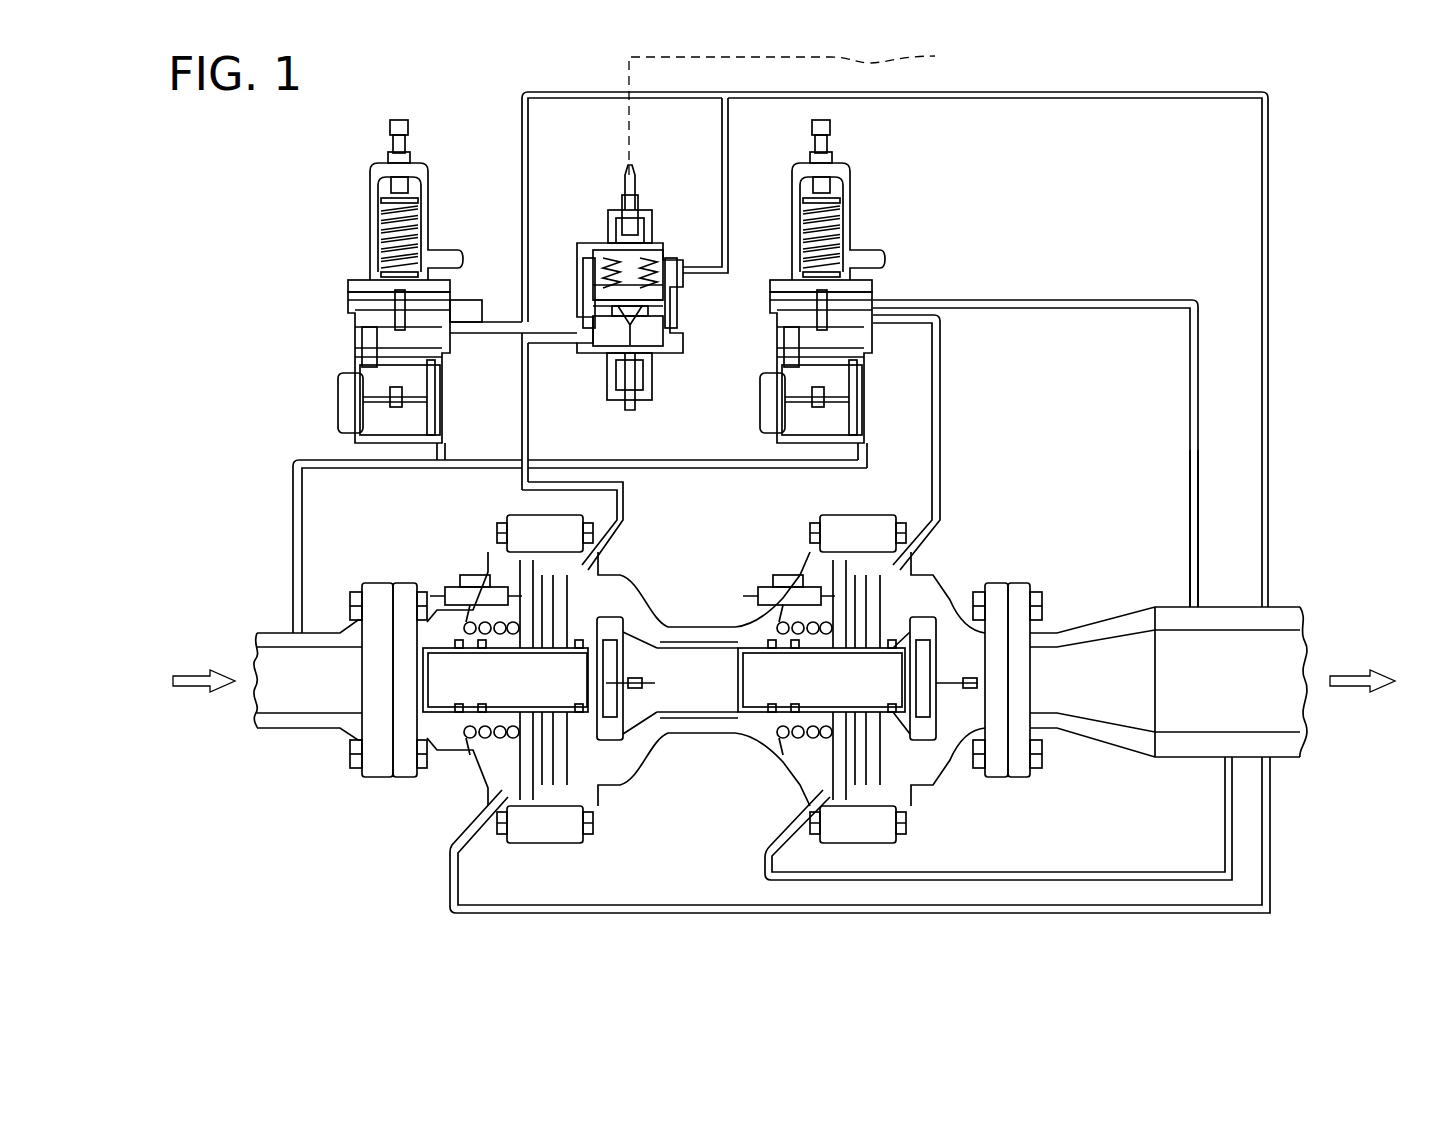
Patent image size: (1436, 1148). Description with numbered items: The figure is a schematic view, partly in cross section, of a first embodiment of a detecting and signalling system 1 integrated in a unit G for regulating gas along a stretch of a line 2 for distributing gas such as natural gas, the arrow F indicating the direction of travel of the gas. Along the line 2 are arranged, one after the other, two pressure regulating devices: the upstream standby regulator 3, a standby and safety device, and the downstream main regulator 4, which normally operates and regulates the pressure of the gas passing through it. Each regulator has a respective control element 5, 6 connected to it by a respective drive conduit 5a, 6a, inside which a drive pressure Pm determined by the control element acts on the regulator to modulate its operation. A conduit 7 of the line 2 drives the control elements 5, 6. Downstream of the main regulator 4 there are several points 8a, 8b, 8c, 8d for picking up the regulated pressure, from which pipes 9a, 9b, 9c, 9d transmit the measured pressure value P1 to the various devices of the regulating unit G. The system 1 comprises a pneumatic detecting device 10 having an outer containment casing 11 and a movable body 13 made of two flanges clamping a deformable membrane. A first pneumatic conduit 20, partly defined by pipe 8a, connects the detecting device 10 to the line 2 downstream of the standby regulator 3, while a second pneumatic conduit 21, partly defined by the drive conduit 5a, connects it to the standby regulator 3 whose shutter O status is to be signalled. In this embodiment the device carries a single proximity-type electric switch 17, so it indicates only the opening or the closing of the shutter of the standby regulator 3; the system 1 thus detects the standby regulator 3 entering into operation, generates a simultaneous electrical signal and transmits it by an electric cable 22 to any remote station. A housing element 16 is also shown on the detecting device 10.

The detecting and signalling system 1 is at (583, 163).
The line for distributing gas 2 is at (292, 737).
The standby regulator 3 is at (487, 560).
The main regulator 4 is at (915, 802).
The control element 5 is at (347, 223).
The drive conduit 5a is at (537, 433).
The control element 6 is at (860, 195).
The drive conduit 6a is at (947, 440).
The conduit for driving the control elements 7 is at (292, 575).
The pressure pick-up point 8a is at (1277, 597).
The pressure pick-up point 8b is at (1277, 223).
The pressure pick-up point 8c is at (1221, 758).
The pressure pick-up point 8d is at (1275, 760).
The pipe 9a is at (1205, 597).
The pipe 9b is at (1183, 443).
The pipe 9c is at (1070, 868).
The pipe 9d is at (1277, 882).
The pneumatic detecting device 10 is at (600, 244).
The outer containment casing 11 is at (663, 237).
The movable body 13 is at (635, 313).
The regulator housing 16 is at (617, 197).
The electric switch 17 is at (645, 198).
The first pneumatic conduit 20 is at (677, 281).
The second pneumatic conduit 21 is at (583, 343).
The electric cable 22 is at (799, 107).
The direction of travel of the gas F is at (204, 668).
The unit for regulating the gas G is at (625, 843).
The shutter O is at (650, 760).
The pressure measured value P1 is at (1221, 687).
The drive pressure Pm is at (633, 507).